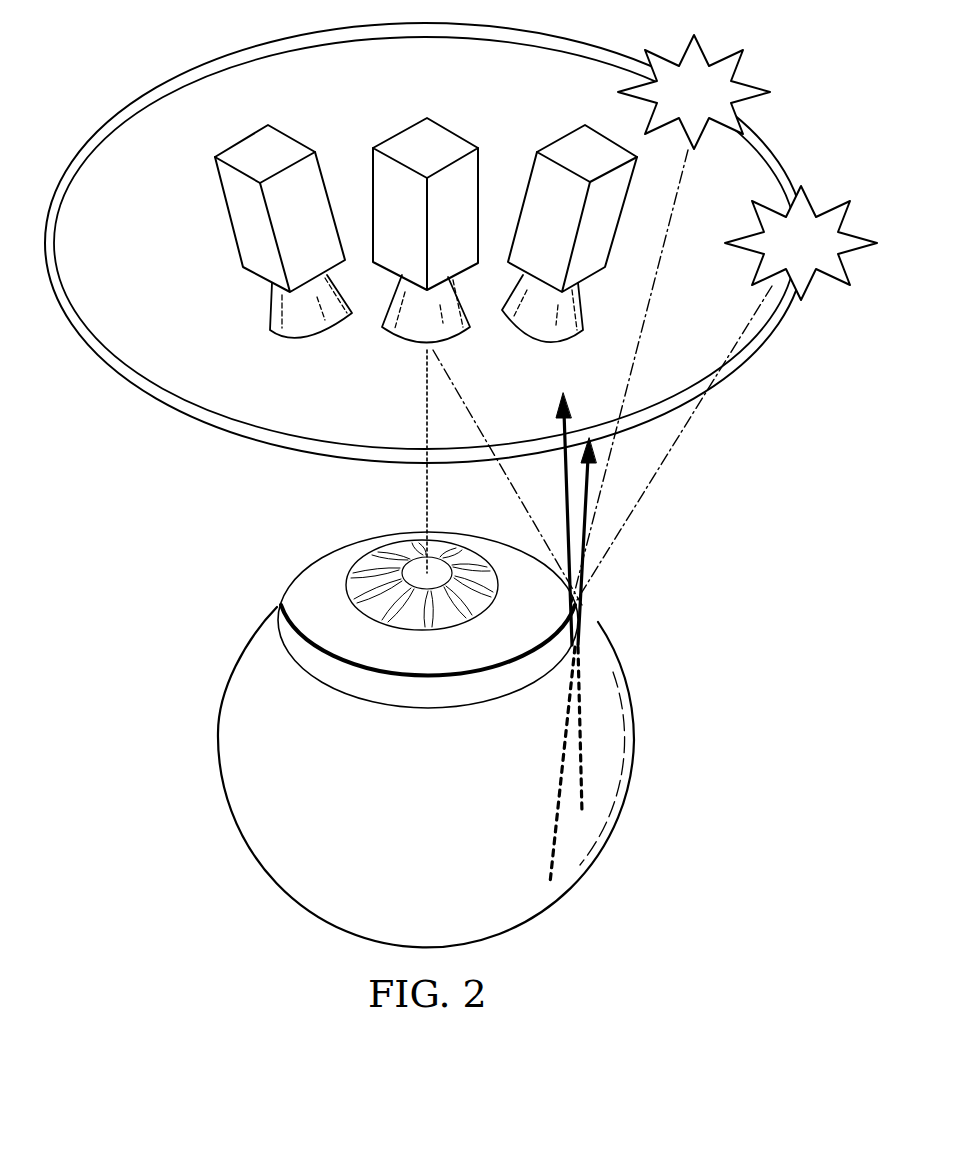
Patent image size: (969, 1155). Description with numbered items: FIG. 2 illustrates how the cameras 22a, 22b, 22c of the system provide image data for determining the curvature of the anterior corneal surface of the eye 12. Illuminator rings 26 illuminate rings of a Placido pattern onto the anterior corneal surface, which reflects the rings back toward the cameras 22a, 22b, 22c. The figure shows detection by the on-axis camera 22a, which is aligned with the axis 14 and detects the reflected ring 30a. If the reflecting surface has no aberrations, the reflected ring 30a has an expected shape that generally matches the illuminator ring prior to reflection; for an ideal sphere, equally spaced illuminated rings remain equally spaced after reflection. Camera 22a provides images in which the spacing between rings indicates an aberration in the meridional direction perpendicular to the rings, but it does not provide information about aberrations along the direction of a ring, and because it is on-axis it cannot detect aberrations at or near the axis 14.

The eye 12 is at (632, 785).
The axis 14 is at (425, 507).
The camera 22a is at (402, 348).
The camera 22b is at (530, 348).
The camera 22c is at (307, 348).
The illuminator rings 26 is at (195, 68).
The reflected ring 30a is at (278, 615).